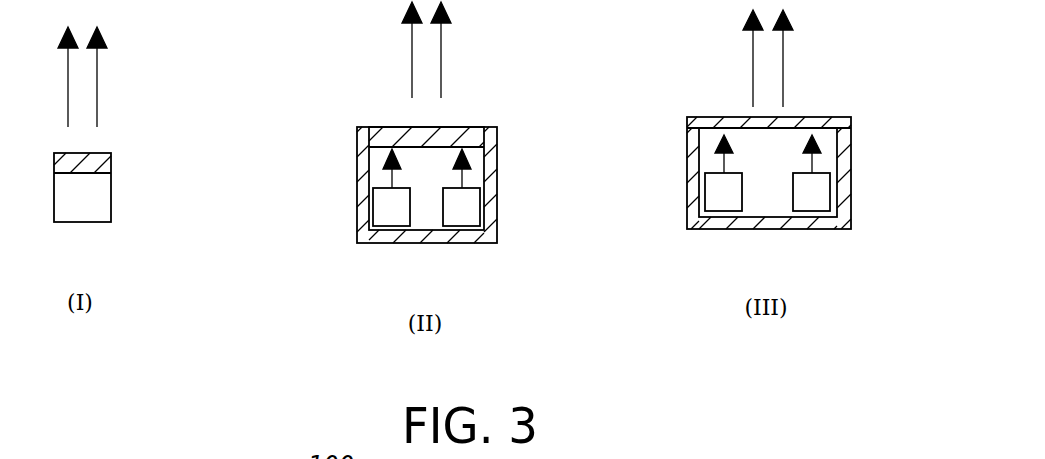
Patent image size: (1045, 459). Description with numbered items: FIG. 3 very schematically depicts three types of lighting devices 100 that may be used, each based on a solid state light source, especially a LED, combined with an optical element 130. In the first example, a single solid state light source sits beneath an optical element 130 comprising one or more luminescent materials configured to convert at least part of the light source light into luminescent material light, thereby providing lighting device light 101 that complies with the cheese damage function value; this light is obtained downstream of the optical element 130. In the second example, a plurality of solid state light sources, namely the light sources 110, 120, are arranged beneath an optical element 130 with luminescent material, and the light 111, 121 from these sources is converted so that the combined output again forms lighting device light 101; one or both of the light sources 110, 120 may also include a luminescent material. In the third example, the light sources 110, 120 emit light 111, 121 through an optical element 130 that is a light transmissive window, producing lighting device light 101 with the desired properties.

The lighting device 100 is at (134, 203).
The lighting device light 101 is at (97, 85).
The light source 110 is at (357, 212).
The first light 111 is at (388, 178).
The light source 120 is at (496, 212).
The second light 121 is at (463, 175).
The optical element 130 is at (111, 162).